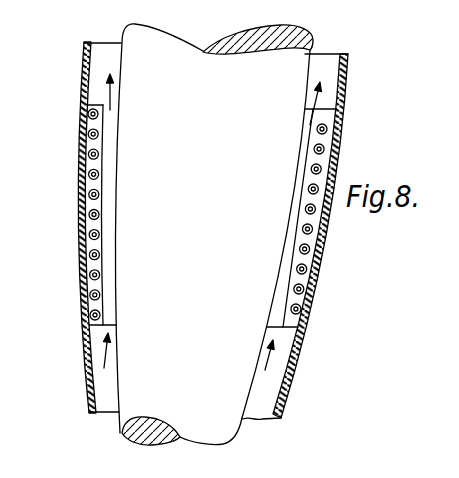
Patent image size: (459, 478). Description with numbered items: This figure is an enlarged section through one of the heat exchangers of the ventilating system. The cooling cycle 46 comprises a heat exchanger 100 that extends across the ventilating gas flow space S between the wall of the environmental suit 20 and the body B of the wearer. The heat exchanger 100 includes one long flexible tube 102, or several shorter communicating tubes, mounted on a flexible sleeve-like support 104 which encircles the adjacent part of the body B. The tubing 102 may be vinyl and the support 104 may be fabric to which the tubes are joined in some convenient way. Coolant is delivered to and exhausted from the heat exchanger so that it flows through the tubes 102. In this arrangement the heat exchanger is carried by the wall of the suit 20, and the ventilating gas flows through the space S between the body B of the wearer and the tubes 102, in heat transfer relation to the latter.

The suit 20 is at (76, 390).
The cooling cycle 46 is at (74, 334).
The heat exchanger 100 is at (75, 160).
The flexible tube 102 is at (100, 274).
The flexible sleeve-like support 104 is at (100, 145).
The body of the wearer B is at (210, 330).
The ventilating gas flow space S is at (108, 400).